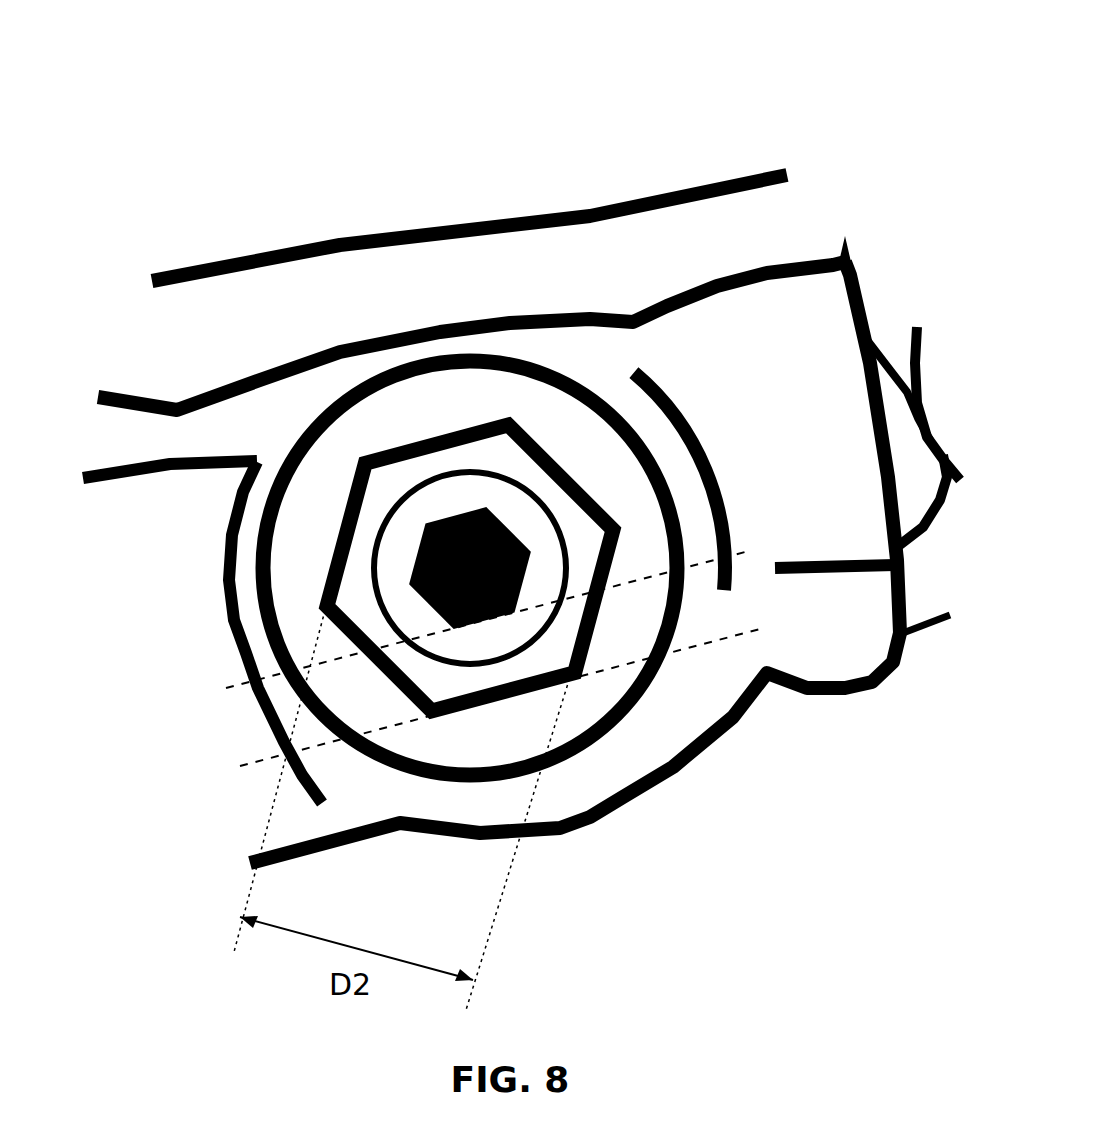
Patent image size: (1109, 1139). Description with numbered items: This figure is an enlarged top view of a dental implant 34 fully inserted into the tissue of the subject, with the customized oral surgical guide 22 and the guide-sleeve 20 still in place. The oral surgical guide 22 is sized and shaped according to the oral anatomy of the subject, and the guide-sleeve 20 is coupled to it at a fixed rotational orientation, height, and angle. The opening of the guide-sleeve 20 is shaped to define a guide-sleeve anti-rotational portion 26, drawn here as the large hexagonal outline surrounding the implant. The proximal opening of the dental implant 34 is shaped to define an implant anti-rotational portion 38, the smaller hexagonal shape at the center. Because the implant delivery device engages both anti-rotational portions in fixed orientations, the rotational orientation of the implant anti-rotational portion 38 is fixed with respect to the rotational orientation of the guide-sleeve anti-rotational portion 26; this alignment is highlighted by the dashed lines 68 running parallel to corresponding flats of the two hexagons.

The guide-sleeve 20 is at (455, 388).
The oral surgical guide 22 is at (750, 330).
The guide-sleeve anti-rotational portion 26 is at (599, 589).
The dental implant 34 is at (311, 568).
The implant anti-rotational portion 38 is at (490, 622).
The dashed lines 68 is at (337, 657).